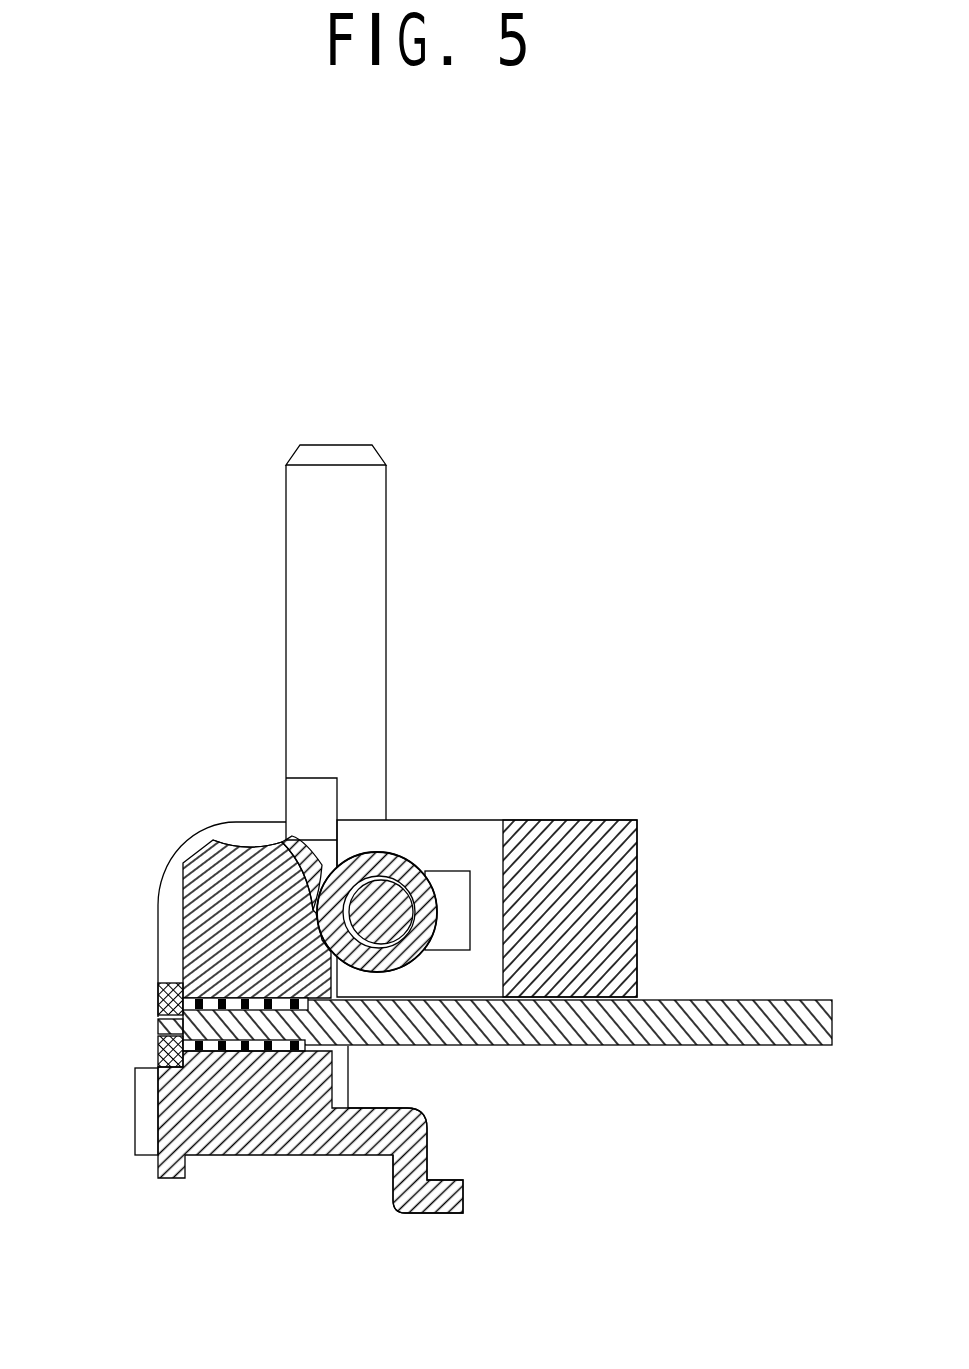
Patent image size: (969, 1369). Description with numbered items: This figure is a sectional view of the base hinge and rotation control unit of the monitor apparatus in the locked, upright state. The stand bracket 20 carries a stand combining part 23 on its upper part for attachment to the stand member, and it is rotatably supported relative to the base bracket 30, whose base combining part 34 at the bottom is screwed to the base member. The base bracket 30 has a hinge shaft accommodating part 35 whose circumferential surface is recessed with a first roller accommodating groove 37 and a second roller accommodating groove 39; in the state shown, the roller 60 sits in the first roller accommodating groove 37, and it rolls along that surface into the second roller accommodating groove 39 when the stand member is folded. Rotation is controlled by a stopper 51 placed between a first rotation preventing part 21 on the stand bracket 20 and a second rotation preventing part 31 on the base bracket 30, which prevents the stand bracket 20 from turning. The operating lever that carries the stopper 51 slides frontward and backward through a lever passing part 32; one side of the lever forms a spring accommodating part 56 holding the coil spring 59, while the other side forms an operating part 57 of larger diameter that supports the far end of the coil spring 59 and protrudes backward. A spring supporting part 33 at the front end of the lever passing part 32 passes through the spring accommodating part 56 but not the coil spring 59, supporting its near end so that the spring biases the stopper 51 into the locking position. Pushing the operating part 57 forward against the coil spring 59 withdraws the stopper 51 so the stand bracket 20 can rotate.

The stand bracket 20 is at (567, 830).
The first rotation preventing part 21 is at (158, 983).
The stand combining part 23 is at (375, 552).
The base bracket 30 is at (390, 1127).
The second rotation preventing part 31 is at (157, 1107).
The lever passing part 32 is at (183, 930).
The spring supporting part 33 is at (228, 997).
The base combining part 34 is at (310, 1155).
The hinge shaft accommodating part 35 is at (232, 781).
The first roller accommodating groove 37 is at (283, 842).
The second roller accommodating groove 39 is at (247, 850).
The stopper 51 is at (158, 1052).
The spring accommodating part 56 is at (240, 1044).
The operating part 57 is at (745, 1045).
The coil spring 59 is at (256, 1044).
The roller 60 is at (408, 862).